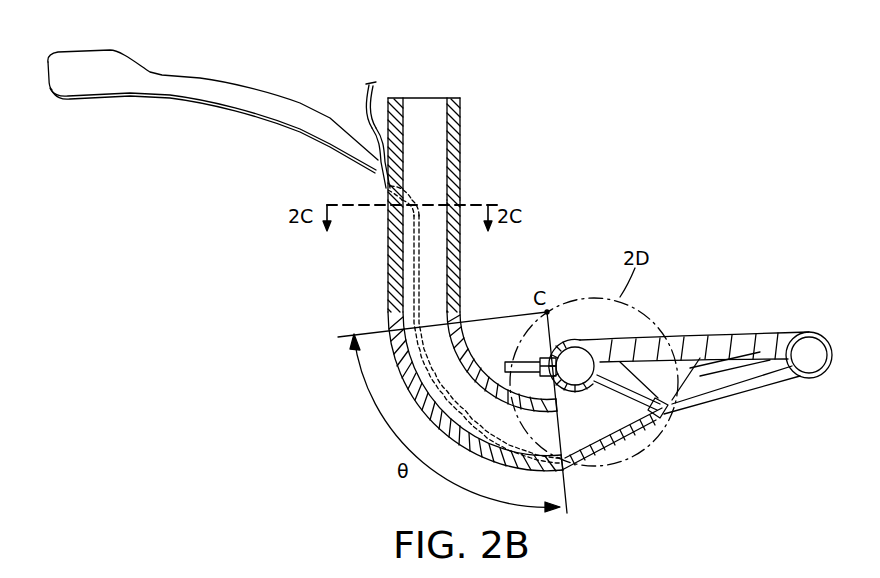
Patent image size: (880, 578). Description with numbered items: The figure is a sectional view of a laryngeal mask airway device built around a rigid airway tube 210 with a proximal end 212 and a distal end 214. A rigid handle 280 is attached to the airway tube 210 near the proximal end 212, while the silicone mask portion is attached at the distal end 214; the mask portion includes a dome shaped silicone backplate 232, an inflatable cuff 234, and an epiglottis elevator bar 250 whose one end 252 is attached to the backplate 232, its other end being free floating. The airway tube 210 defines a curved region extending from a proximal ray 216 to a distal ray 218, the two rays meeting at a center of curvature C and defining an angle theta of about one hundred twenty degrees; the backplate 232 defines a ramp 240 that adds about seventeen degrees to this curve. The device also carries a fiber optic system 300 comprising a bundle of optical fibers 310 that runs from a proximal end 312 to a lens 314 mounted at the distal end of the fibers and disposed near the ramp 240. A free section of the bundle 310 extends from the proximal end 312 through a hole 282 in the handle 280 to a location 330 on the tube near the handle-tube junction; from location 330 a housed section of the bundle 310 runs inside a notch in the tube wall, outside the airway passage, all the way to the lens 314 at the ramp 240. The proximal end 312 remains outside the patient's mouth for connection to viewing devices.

The rigid handle 280 is at (183, 86).
The proximal end of optical fiber bundle 312 is at (369, 80).
The hole in handle 282 is at (375, 152).
The proximal end of airway tube 212 is at (432, 97).
The rigid airway tube 210 is at (386, 281).
The distal end of airway tube 214 is at (597, 455).
The location on airway tube 330 is at (385, 189).
The bundle of optical fibers 310 is at (411, 212).
The fiber optic system 300 is at (412, 251).
The proximal ray 216 is at (353, 336).
The distal ray 218 is at (568, 500).
The end of epiglottis elevator bar 252 is at (612, 344).
The epiglottis elevator bar 250 is at (650, 385).
The lens 314 is at (700, 380).
The inflatable cuff 234 is at (812, 378).
The backplate 232 is at (712, 388).
The ramp 240 is at (622, 408).